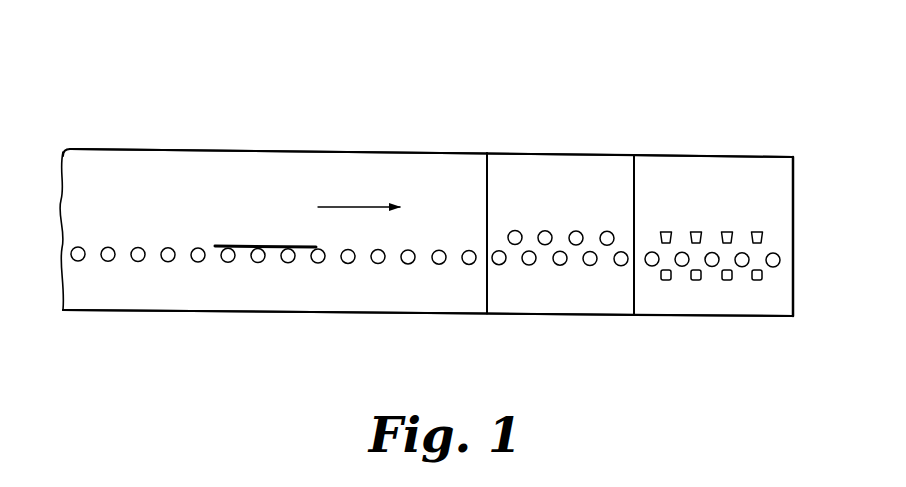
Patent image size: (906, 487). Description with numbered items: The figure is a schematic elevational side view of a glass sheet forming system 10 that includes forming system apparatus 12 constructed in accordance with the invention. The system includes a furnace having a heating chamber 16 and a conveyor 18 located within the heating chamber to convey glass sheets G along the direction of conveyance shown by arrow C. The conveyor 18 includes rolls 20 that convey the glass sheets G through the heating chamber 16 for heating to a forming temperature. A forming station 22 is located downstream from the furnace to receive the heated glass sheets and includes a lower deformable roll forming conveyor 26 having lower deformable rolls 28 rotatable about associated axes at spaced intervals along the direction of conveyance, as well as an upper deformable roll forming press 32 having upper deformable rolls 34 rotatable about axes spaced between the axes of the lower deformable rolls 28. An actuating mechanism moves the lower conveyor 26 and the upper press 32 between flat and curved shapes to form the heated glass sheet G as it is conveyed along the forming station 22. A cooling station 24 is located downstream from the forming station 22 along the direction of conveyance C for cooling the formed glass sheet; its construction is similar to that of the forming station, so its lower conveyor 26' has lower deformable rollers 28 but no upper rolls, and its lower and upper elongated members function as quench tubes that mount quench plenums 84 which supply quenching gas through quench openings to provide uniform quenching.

The glass sheet forming system 10 is at (473, 80).
The heating chamber 16 is at (287, 151).
The conveyor 18 is at (62, 255).
The forming system apparatus 12 is at (511, 150).
The forming station 22 is at (598, 150).
The cooling station 24 is at (737, 150).
The rolls 20 is at (228, 262).
The glass sheets G is at (267, 243).
The direction of conveyance C is at (360, 208).
The lower deformable roll forming conveyor 26 is at (465, 310).
The lower conveyor 26' is at (808, 303).
The upper deformable roll forming press 32 is at (505, 236).
The upper deformable rolls 34 is at (521, 234).
The lower deformable rolls 28 is at (615, 265).
The quench plenums 84 is at (672, 232).